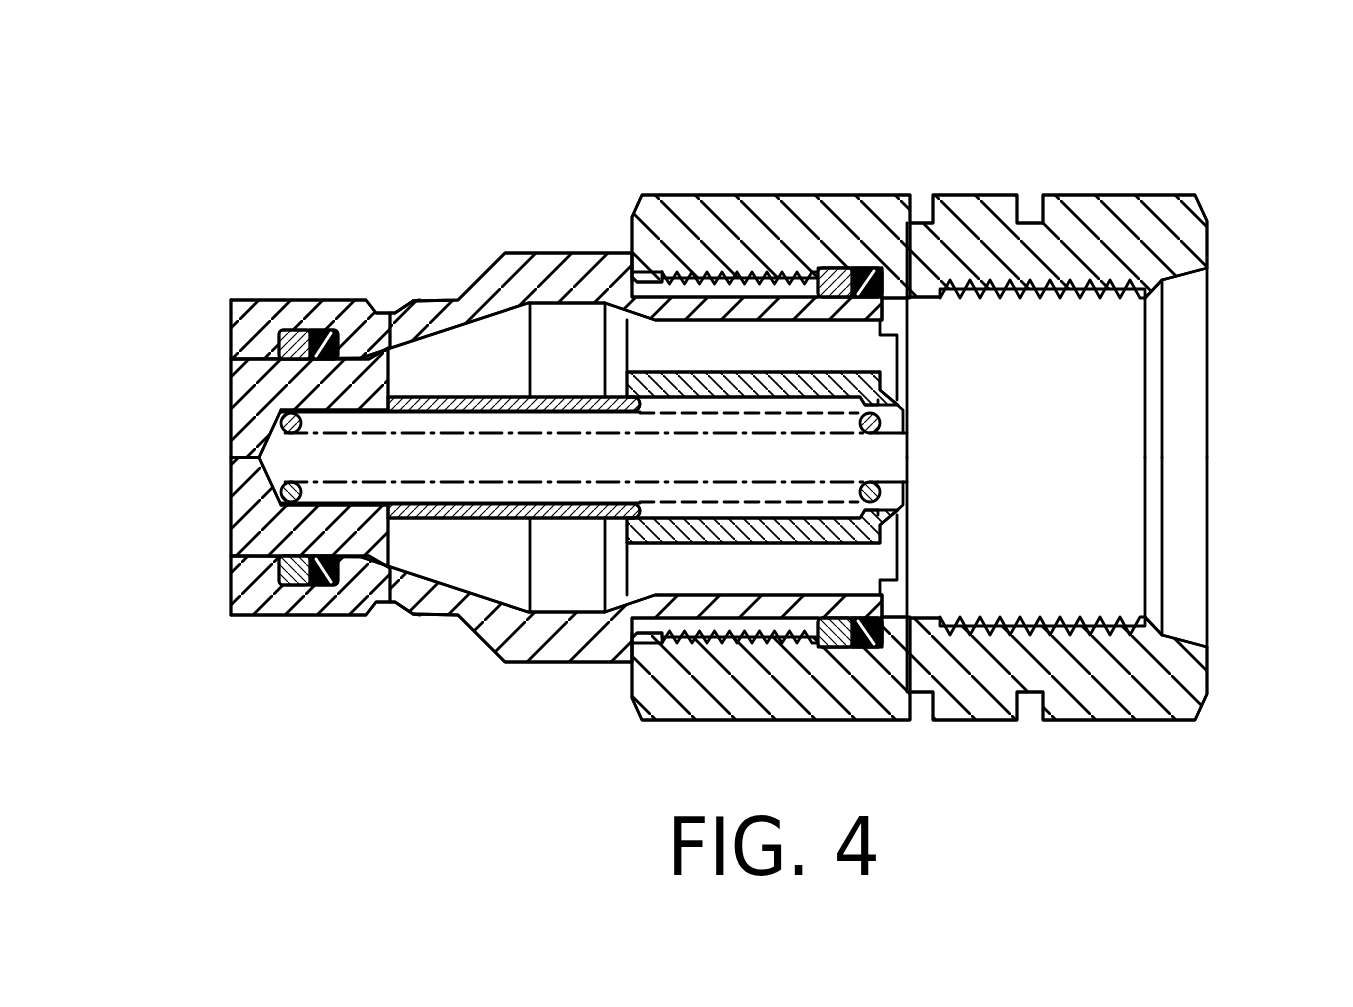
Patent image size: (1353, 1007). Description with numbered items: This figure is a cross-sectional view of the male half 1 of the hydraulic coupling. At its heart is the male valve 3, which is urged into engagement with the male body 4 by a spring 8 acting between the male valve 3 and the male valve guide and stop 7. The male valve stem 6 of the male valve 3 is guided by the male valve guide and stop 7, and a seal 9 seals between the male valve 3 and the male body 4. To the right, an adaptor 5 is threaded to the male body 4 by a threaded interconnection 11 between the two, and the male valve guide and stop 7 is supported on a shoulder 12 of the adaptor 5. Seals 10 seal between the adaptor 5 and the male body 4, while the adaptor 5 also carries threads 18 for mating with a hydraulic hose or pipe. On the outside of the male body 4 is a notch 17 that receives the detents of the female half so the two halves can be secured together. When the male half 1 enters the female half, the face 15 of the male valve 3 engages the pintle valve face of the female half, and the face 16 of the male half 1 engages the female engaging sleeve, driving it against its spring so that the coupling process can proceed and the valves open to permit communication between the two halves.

The male half 1 is at (735, 417).
The male valve 3 is at (246, 398).
The male body 4 is at (262, 327).
The adaptor 5 is at (1100, 240).
The male valve stem 6 is at (552, 400).
The male valve guide and stop 7 is at (718, 382).
The spring 8 is at (437, 428).
The seal 9 is at (324, 338).
The seals 10 is at (858, 295).
The threaded interconnection 11 is at (828, 650).
The shoulder 12 is at (840, 650).
The face 15 is at (233, 476).
The face 16 is at (231, 583).
The notch 17 is at (397, 603).
The threads 18 is at (1033, 290).